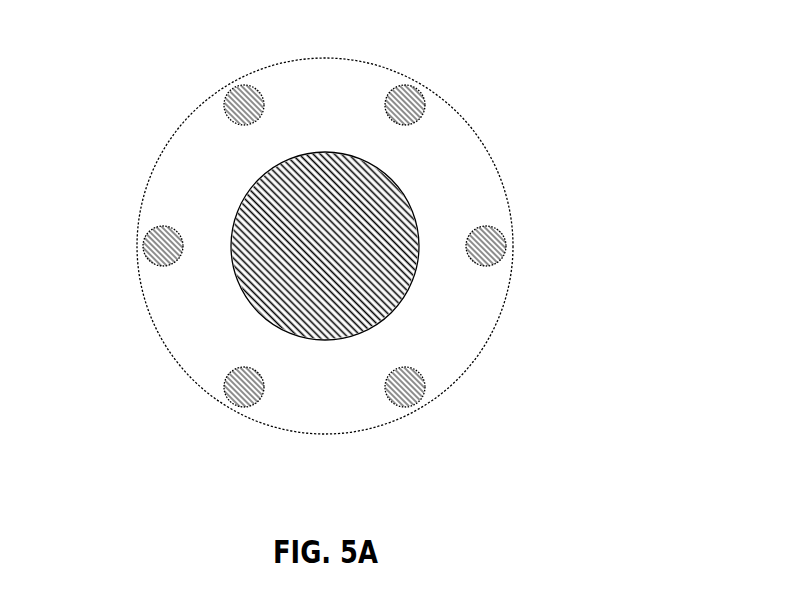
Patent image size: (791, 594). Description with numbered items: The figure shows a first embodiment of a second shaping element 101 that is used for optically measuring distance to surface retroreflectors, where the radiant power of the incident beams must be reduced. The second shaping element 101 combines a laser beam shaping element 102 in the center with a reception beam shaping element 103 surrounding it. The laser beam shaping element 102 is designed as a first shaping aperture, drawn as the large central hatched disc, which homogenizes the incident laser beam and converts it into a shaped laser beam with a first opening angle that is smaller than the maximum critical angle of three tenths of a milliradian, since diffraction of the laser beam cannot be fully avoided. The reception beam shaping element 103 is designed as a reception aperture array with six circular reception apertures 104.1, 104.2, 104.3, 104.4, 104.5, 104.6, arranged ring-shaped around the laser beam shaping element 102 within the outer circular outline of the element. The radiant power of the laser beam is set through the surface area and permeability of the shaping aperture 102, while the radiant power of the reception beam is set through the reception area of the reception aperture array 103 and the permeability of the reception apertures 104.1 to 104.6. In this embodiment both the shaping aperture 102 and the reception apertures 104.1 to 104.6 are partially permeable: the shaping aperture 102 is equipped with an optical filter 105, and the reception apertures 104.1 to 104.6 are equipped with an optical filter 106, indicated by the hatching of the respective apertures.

The second shaping element 101 is at (347, 249).
The laser beam shaping element 102 is at (385, 215).
The reception beam shaping element 103 is at (183, 322).
The reception aperture 104.1 is at (510, 245).
The reception aperture 104.2 is at (405, 84).
The reception aperture 104.3 is at (244, 84).
The reception aperture 104.4 is at (143, 248).
The reception aperture 104.5 is at (244, 408).
The reception aperture 104.6 is at (405, 408).
The optical filter 105 is at (322, 342).
The optical filter 106 is at (253, 100).